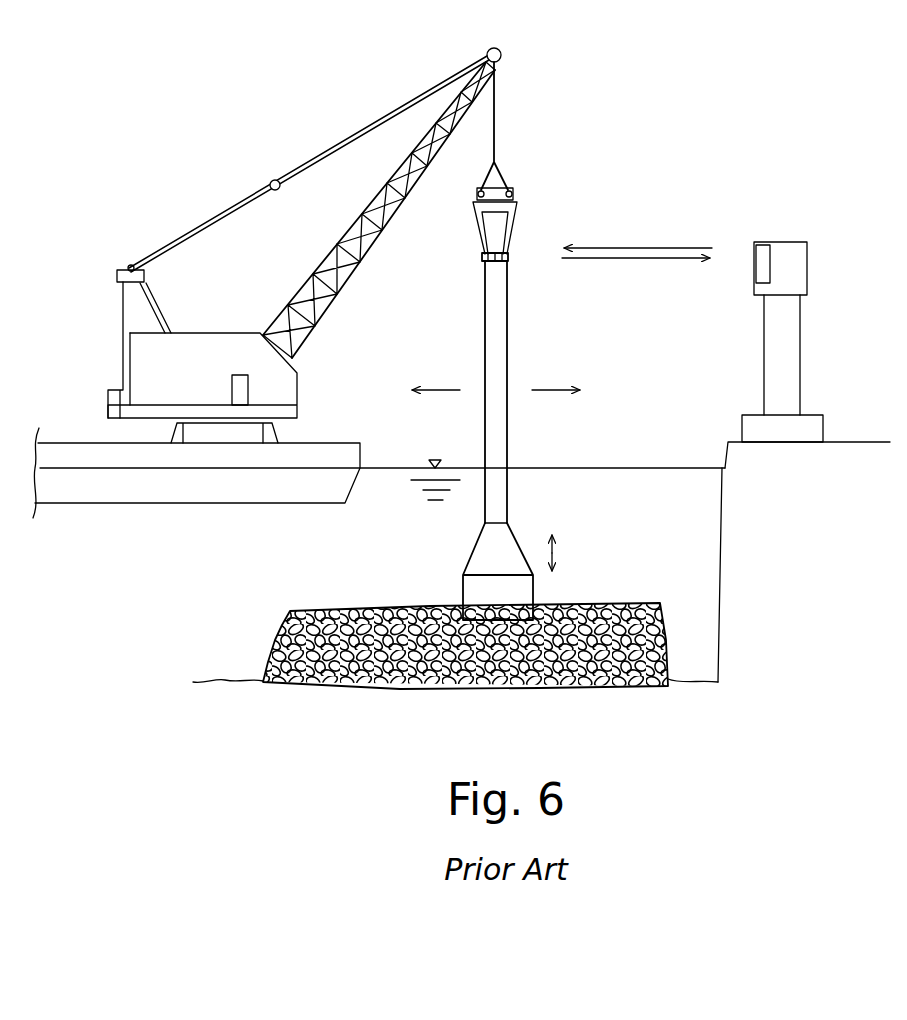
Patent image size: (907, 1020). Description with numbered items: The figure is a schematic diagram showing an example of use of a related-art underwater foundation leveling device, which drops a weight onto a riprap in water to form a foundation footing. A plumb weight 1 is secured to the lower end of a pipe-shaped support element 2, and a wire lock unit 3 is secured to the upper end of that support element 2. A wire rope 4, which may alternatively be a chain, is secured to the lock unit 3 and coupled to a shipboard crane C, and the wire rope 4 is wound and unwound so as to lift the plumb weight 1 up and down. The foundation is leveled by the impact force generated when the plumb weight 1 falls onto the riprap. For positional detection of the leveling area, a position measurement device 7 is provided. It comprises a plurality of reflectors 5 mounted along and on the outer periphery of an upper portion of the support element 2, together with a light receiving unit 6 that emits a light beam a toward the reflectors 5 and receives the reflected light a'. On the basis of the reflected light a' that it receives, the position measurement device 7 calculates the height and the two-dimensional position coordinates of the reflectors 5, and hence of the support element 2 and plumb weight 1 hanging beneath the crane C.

The plumb weight 1 is at (468, 595).
The pipe-shaped support element 2 is at (483, 320).
The wire lock unit 3 is at (518, 193).
The wire rope 4 is at (515, 95).
The reflectors 5 is at (483, 257).
The light receiving unit 6 is at (768, 248).
The position measurement device 7 is at (798, 313).
The shipboard crane C is at (382, 112).
The light beam a is at (634, 218).
The reflected light a' is at (652, 288).